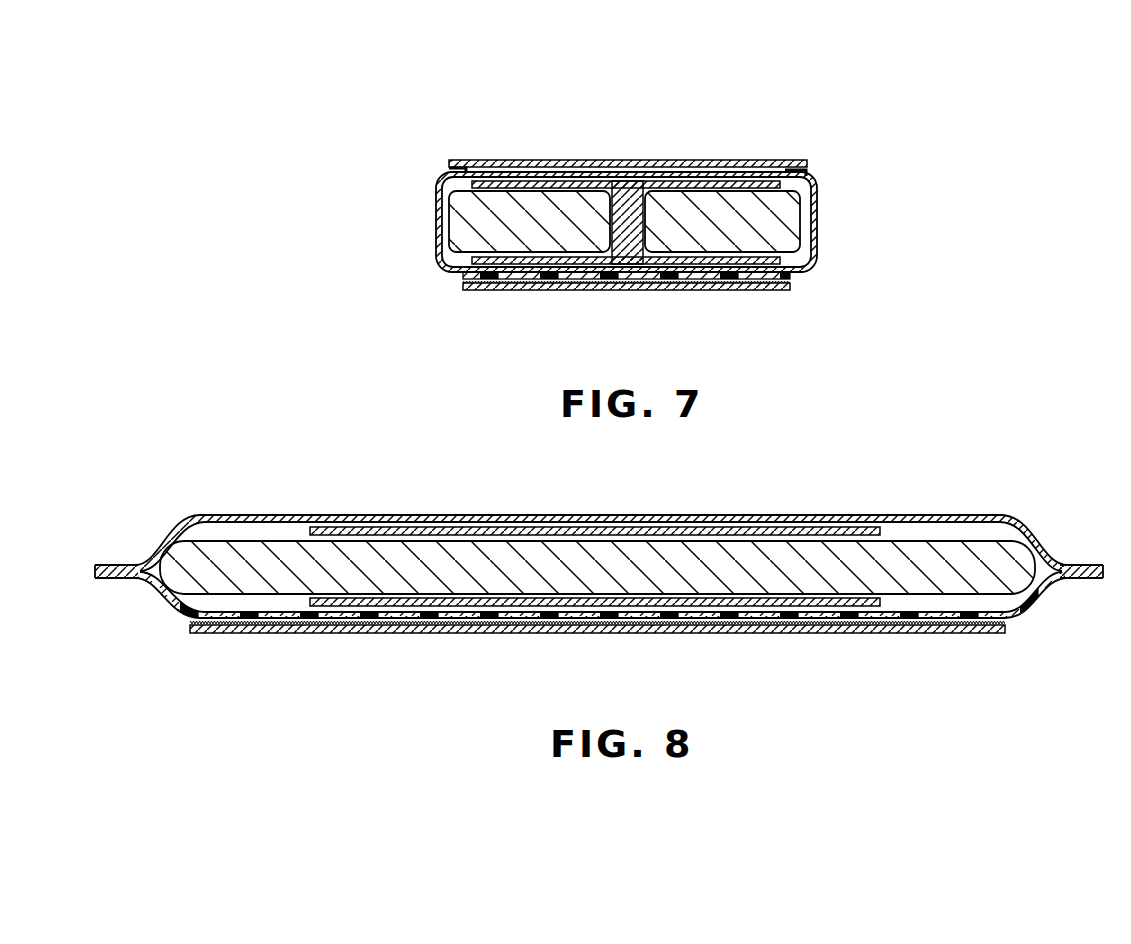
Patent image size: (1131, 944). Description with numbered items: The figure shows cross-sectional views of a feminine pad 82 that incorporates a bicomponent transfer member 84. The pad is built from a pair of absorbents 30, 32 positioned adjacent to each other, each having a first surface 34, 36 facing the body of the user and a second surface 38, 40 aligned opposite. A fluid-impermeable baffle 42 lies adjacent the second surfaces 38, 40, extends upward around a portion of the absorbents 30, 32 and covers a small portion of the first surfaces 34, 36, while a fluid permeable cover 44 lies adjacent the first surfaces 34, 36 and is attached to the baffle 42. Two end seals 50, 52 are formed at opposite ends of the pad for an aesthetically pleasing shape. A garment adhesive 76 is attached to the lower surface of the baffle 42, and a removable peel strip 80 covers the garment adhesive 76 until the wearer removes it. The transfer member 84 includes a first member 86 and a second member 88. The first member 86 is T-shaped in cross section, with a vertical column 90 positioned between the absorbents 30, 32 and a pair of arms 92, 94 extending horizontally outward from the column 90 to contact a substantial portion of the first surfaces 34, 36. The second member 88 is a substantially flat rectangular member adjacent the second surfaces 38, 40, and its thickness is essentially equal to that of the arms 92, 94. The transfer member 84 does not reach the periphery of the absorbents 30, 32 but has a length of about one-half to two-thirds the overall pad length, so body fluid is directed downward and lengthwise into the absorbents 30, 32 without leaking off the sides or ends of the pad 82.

In FIG. 7, the absorbent 30 is at (460, 212).
In FIG. 7, the absorbent 32 is at (797, 192).
In FIG. 8, the absorbent 32 is at (935, 550).
In FIG. 7, the first surface 34 is at (507, 189).
In FIG. 7, the first surface 36 is at (757, 182).
In FIG. 7, the second surface 38 is at (445, 268).
In FIG. 7, the second surface 40 is at (813, 257).
In FIG. 7, the fluid-impermeable baffle 42 is at (460, 279).
In FIG. 8, the fluid-impermeable baffle 42 is at (162, 602).
In FIG. 7, the fluid permeable cover 44 is at (642, 163).
In FIG. 8, the fluid permeable cover 44 is at (476, 516).
In FIG. 8, the end seal 50 is at (105, 563).
In FIG. 8, the end seal 52 is at (1080, 567).
In FIG. 7, the garment adhesive 76 is at (753, 291).
In FIG. 8, the garment adhesive 76 is at (862, 628).
In FIG. 7, the removable peel strip 80 is at (662, 290).
In FIG. 8, the removable peel strip 80 is at (943, 633).
In FIG. 7, the feminine pad 82 is at (434, 84).
In FIG. 8, the feminine pad 82 is at (323, 461).
In FIG. 7, the bicomponent transfer member 84 is at (666, 168).
In FIG. 7, the first member 86 is at (624, 183).
In FIG. 8, the first member 86 is at (748, 530).
In FIG. 7, the second member 88 is at (800, 272).
In FIG. 8, the second member 88 is at (307, 602).
In FIG. 7, the vertical column 90 is at (613, 254).
In FIG. 7, the arm 92 is at (546, 183).
In FIG. 7, the arm 94 is at (721, 183).